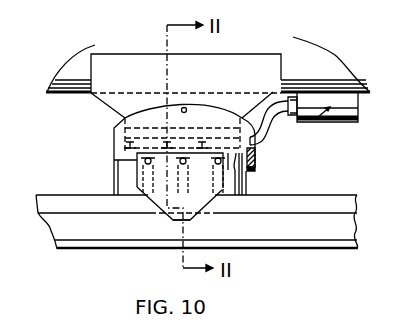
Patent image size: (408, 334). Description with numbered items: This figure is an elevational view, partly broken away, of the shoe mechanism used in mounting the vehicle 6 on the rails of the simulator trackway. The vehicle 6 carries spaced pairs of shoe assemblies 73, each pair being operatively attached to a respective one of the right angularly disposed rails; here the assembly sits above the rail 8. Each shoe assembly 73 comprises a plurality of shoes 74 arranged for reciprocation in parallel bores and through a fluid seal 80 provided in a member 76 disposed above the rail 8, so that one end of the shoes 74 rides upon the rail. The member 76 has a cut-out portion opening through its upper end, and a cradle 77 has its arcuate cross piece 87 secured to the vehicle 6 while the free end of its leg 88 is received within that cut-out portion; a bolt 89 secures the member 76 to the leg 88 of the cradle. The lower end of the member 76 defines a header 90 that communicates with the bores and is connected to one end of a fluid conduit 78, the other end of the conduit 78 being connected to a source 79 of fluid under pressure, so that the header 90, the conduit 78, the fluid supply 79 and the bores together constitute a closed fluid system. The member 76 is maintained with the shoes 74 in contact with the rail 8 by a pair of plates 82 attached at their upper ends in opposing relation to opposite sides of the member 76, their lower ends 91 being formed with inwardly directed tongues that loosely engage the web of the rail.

The vehicle 6 is at (327, 60).
The rail 8 is at (347, 220).
The shoe assembly 73 is at (118, 188).
The shoe 74 is at (239, 180).
The member 76 is at (114, 130).
The cradle 77 is at (90, 70).
The fluid conduit 78 is at (266, 130).
The source of fluid under pressure 79 is at (342, 123).
The fluid seal 80 is at (256, 169).
The plate 82 is at (137, 165).
The arcuate cross piece 87 is at (269, 68).
The leg 88 is at (113, 108).
The bolt 89 is at (187, 109).
The header 90 is at (255, 148).
The lower end 91 is at (190, 220).